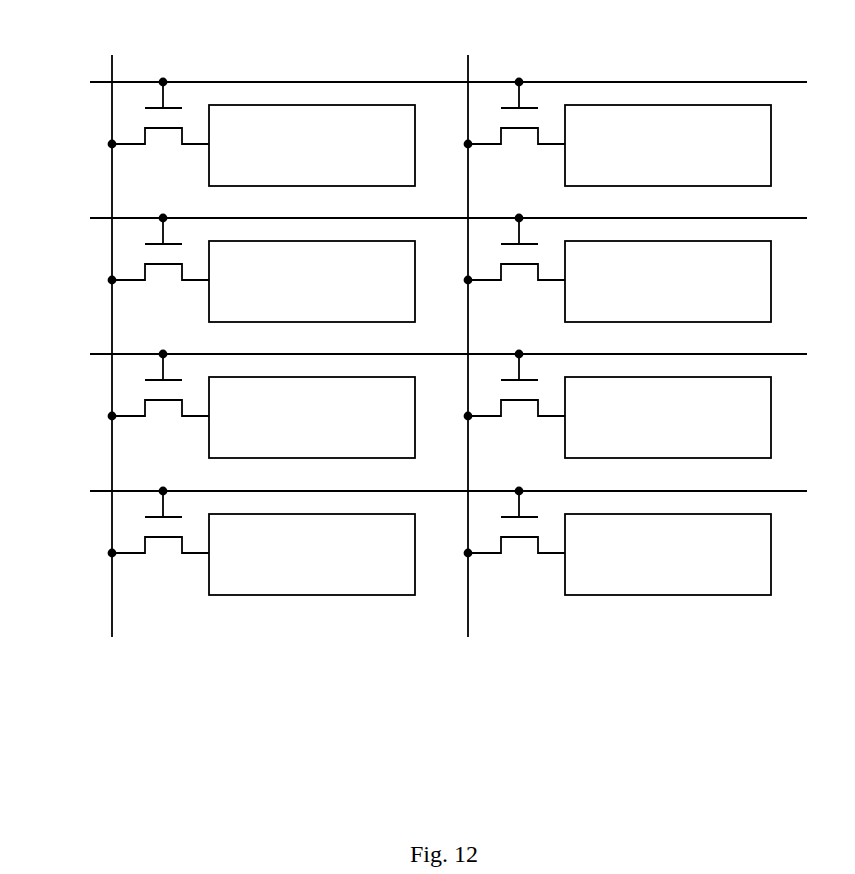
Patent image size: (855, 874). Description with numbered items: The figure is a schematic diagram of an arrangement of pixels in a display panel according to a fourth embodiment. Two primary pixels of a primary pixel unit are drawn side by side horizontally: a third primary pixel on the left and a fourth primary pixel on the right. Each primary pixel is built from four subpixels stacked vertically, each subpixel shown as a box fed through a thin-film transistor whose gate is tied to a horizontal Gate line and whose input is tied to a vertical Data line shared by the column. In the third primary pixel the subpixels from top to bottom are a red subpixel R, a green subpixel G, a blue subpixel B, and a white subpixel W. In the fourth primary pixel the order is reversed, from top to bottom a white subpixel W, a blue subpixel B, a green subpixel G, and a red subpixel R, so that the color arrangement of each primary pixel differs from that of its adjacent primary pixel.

The data line Data is at (275, 330).
The gate line Gate is at (414, 287).
The red subpixel R is at (490, 350).
The green subpixel G is at (490, 349).
The blue subpixel B is at (490, 349).
The white subpixel W is at (490, 350).